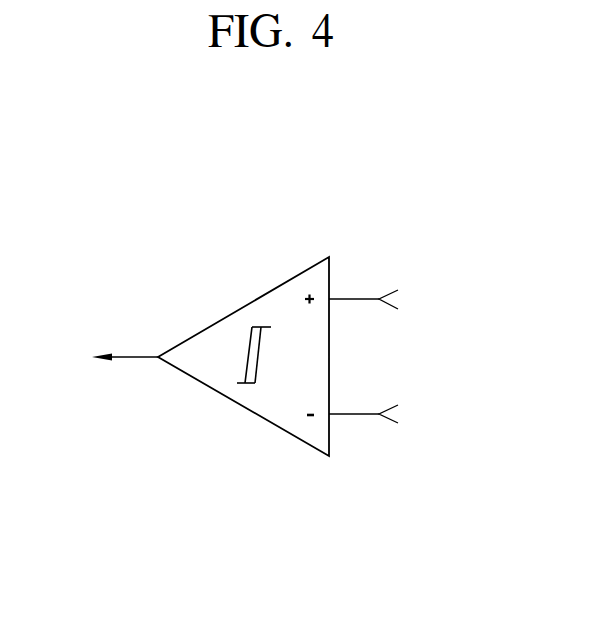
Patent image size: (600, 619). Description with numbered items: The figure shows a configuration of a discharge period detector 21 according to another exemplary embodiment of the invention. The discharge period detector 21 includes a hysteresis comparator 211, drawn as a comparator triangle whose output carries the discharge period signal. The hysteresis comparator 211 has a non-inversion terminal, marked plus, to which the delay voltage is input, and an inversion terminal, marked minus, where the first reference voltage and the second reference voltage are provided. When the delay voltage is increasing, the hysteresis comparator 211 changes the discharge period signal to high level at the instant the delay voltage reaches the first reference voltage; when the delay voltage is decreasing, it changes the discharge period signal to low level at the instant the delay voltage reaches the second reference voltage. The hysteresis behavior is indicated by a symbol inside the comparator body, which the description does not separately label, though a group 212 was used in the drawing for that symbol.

The discharge period detector 21 is at (261, 302).
The hysteresis comparator 211 is at (248, 303).
The hysteresis characteristic symbol 212 is at (254, 355).